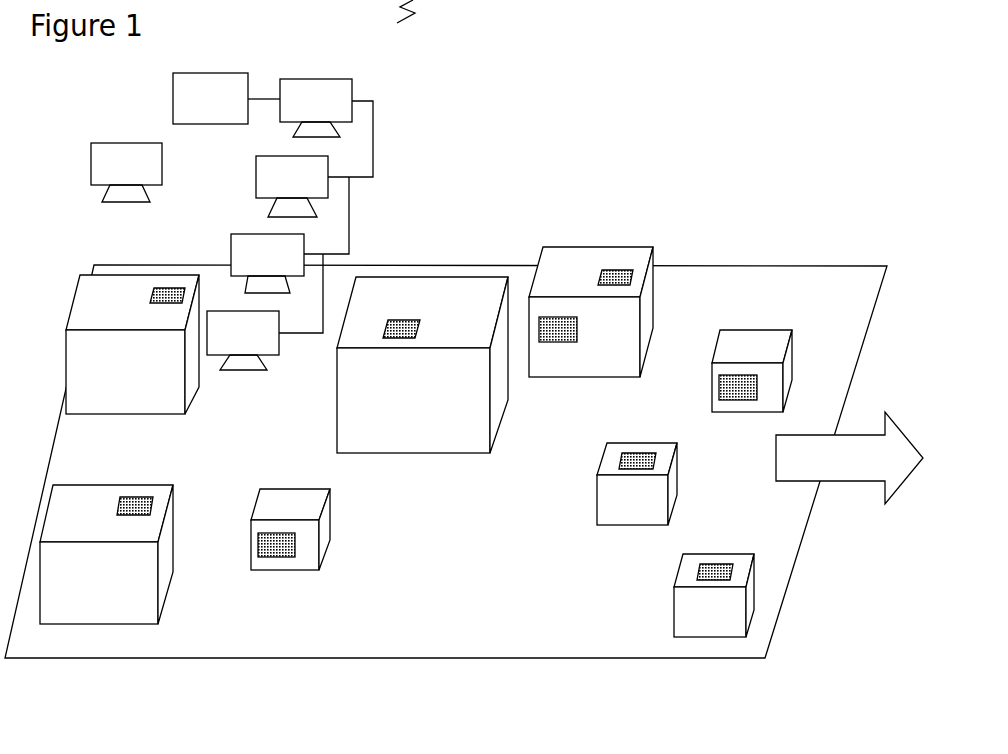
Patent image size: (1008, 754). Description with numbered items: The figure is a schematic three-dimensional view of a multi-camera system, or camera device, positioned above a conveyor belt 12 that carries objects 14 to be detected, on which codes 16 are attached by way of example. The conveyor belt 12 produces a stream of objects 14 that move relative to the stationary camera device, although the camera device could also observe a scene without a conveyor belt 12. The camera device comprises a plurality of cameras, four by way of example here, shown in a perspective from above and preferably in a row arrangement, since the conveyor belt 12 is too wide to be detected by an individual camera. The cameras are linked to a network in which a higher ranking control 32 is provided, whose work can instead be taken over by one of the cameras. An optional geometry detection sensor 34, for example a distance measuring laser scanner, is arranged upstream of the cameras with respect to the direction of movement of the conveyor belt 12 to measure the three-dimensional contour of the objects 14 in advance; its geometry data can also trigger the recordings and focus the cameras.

The conveyor belt 12 is at (776, 267).
The objects 14 is at (591, 276).
The codes 16 is at (740, 377).
The higher ranking control 32 is at (210, 76).
The geometry detection sensor 34 is at (110, 145).